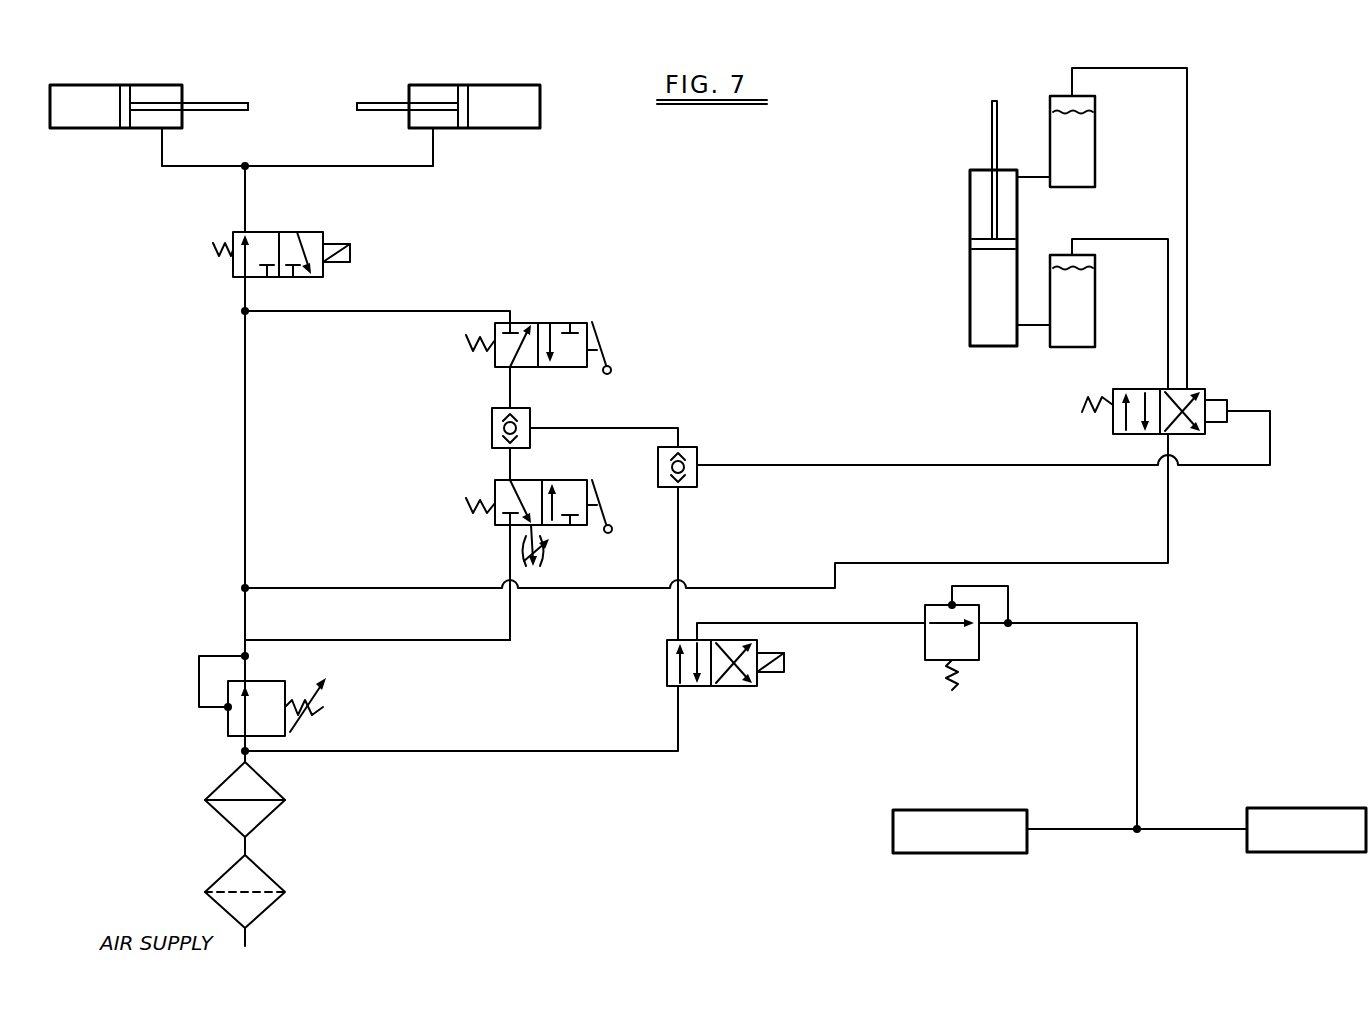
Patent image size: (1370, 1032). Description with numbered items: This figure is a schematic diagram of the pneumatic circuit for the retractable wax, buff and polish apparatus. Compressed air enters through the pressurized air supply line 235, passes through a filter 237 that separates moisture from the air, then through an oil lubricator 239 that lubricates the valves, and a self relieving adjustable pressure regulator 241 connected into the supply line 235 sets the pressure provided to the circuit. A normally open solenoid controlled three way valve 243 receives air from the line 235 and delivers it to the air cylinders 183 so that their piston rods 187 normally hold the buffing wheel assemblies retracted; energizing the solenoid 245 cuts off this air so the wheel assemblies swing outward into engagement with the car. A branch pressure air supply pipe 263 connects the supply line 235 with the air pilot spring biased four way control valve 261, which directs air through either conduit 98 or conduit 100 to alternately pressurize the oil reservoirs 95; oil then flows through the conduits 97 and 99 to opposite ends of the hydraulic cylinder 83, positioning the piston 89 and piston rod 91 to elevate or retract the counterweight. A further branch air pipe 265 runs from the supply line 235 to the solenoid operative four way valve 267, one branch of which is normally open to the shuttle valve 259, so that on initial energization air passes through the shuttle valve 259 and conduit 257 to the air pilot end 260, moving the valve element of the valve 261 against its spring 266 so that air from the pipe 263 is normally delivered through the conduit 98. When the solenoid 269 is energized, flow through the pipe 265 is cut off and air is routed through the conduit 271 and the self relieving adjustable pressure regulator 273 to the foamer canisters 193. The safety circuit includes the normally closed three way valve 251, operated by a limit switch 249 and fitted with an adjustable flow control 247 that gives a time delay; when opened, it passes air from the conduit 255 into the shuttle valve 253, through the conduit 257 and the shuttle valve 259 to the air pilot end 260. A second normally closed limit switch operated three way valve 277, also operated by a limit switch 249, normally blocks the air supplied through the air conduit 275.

The air cylinder assembly 183 is at (110, 130).
The piston rod 187 is at (236, 103).
The normally open solenoid controlled three way valve 243 is at (233, 232).
The solenoid 245 is at (339, 243).
The air conduit 275 is at (398, 312).
The pressurized air supply line 235 is at (245, 420).
The second normally closed limit switch operated three way valve 277 is at (545, 322).
The limit switch 249 is at (598, 353).
The shuttle valve 253 is at (492, 430).
The conduit 257 is at (620, 426).
The shuttle valve 259 is at (700, 447).
The normally closed three way valve 251 is at (500, 530).
The adjustable flow control 247 is at (540, 553).
The branch pressure air supply pipe 263 is at (378, 592).
The conduit 255 is at (447, 641).
The branch air pipe 265 is at (519, 748).
The self relieving adjustable pressure regulator 241 is at (230, 717).
The oil lubricator 239 is at (227, 786).
The filter 237 is at (263, 870).
The solenoid operative four way valve 267 is at (716, 693).
The solenoid 269 is at (784, 674).
The conduit 271 is at (873, 622).
The self relieving adjustable pressure regulator 273 is at (980, 645).
The foamer canister 193 is at (957, 799).
The hydraulic cylinder 83 is at (970, 317).
The piston 89 is at (987, 250).
The piston rod 91 is at (992, 139).
The conduit 99 is at (1037, 177).
The conduit 97 is at (1040, 327).
The oil reservoir 95 is at (1087, 137).
The conduit 98 is at (1189, 300).
The conduit 100 is at (1168, 283).
The air pilot spring biased four way control valve 261 is at (1135, 438).
The spring 266 is at (1098, 396).
The air pilot end 260 is at (1226, 396).